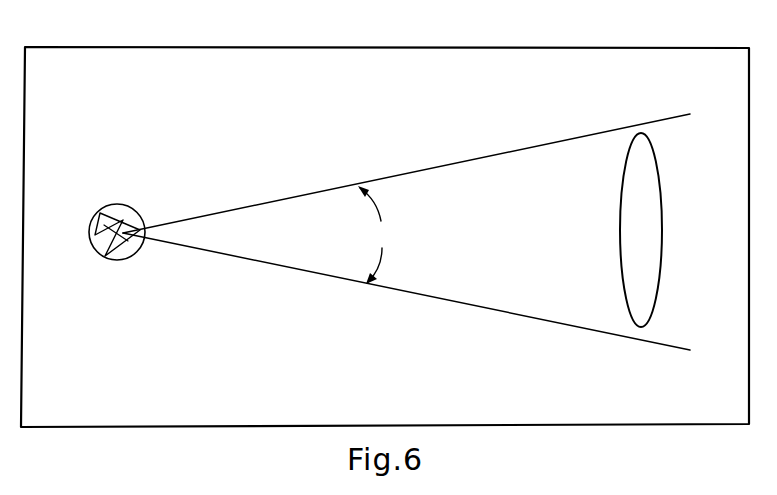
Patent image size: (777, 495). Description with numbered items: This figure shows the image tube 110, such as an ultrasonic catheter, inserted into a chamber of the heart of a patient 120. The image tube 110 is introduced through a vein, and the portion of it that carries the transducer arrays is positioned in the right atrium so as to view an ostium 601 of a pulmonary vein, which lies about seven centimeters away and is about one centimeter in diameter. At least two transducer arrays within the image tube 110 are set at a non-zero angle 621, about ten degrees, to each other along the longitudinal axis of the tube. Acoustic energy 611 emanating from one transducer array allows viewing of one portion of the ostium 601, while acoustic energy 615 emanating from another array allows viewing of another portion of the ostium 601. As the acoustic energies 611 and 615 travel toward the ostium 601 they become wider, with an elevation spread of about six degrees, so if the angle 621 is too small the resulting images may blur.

The patient 120 is at (627, 47).
The image tube 110 is at (113, 205).
The acoustic energy 615 is at (265, 201).
The acoustic energy 611 is at (252, 261).
The non-zero angle 621 is at (378, 235).
The ostium 601 is at (653, 235).